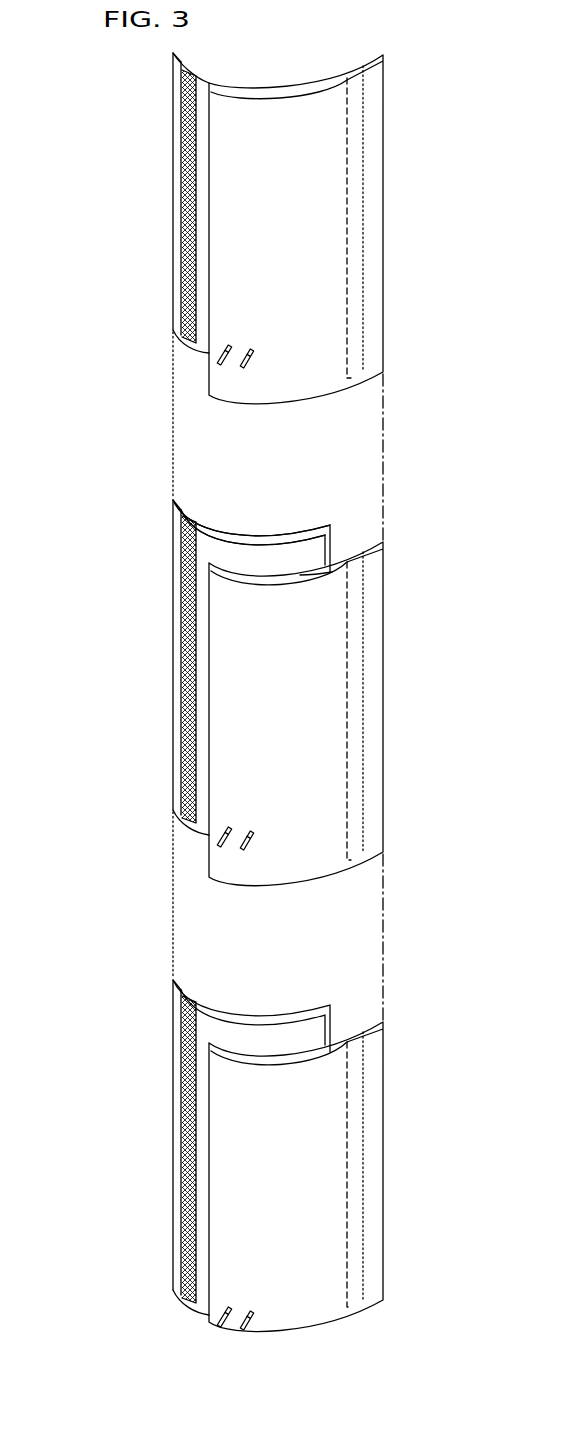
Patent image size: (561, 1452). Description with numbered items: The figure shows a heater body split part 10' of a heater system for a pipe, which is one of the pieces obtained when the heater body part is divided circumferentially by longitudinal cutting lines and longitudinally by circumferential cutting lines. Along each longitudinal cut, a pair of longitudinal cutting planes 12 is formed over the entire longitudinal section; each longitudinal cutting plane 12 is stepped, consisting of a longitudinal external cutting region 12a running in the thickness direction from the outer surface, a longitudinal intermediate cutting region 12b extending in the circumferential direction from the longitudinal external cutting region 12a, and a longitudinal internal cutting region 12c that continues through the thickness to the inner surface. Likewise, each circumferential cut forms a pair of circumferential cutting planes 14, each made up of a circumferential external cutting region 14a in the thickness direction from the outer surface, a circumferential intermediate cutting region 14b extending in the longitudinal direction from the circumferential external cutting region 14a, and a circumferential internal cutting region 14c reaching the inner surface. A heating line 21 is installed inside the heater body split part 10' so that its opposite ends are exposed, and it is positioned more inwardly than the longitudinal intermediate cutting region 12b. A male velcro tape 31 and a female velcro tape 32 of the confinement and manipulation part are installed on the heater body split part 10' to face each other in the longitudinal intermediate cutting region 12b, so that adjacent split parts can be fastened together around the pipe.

The heater body split part 10' is at (329, 693).
The longitudinal cutting plane 12 is at (92, 114).
The longitudinal external cutting region 12a is at (209, 174).
The longitudinal intermediate cutting region 12b is at (177, 143).
The longitudinal internal cutting region 12c is at (172, 105).
The circumferential cutting plane 14 is at (437, 423).
The circumferential external cutting region 14a is at (315, 570).
The circumferential intermediate cutting region 14b is at (303, 548).
The circumferential internal cutting region 14c is at (285, 533).
The heating line 21 is at (242, 369).
The male velcro tape 31 is at (357, 242).
The female velcro tape 32 is at (182, 248).